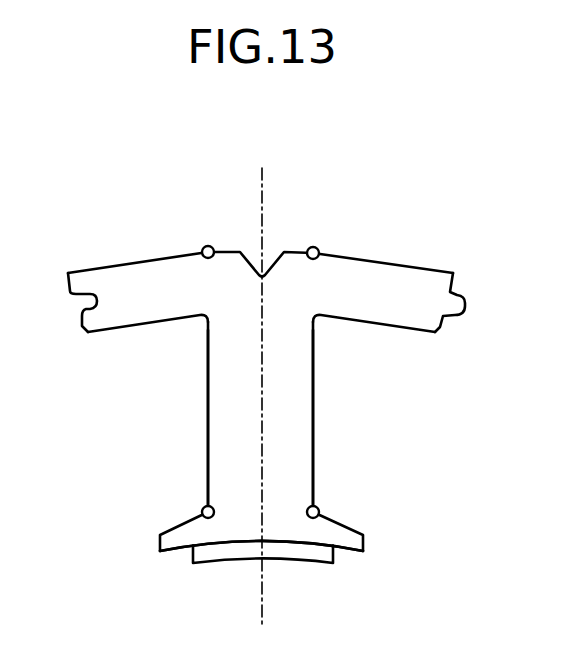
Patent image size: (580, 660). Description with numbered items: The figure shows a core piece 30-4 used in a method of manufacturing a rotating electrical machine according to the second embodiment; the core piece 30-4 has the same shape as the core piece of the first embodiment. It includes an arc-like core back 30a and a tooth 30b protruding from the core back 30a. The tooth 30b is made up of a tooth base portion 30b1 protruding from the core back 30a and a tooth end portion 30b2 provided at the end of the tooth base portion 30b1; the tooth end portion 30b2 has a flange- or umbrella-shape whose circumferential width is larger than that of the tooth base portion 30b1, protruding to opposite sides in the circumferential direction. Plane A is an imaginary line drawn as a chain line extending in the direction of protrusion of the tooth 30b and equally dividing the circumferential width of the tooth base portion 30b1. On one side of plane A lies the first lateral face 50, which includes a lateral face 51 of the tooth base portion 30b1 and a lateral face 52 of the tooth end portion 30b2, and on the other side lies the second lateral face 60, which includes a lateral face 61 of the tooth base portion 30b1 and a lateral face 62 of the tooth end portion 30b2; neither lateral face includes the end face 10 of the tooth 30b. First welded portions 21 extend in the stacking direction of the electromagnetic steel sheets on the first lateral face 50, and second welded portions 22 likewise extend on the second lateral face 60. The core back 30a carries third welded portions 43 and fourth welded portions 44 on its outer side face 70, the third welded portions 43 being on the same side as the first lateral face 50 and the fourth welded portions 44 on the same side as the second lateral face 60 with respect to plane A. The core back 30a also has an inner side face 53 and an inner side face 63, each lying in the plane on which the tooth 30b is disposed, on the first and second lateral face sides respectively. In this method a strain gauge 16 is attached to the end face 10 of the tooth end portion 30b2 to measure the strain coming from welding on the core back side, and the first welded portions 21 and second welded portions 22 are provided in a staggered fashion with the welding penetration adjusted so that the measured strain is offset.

The plane A is at (262, 197).
The core piece 30-4 is at (289, 138).
The outer side face 70 is at (403, 262).
The core back 30a is at (423, 300).
The third welded portions 43 is at (206, 246).
The fourth welded portions 44 is at (318, 248).
The tooth 30b is at (320, 366).
The tooth base portion 30b1 is at (208, 372).
The tooth end portion 30b2 is at (352, 544).
The first lateral face 50 is at (109, 433).
The lateral face of the tooth base portion 51 is at (208, 388).
The lateral face of the tooth end portion 52 is at (182, 524).
The inner side face 53 is at (113, 328).
The second lateral face 60 is at (422, 433).
The lateral face of the tooth base portion 61 is at (313, 390).
The lateral face of the tooth end portion 62 is at (338, 523).
The inner side face 63 is at (405, 328).
The first welded portions 21 is at (202, 513).
The second welded portions 22 is at (319, 513).
The strain gauge 16 is at (227, 563).
The end face 10 is at (336, 553).